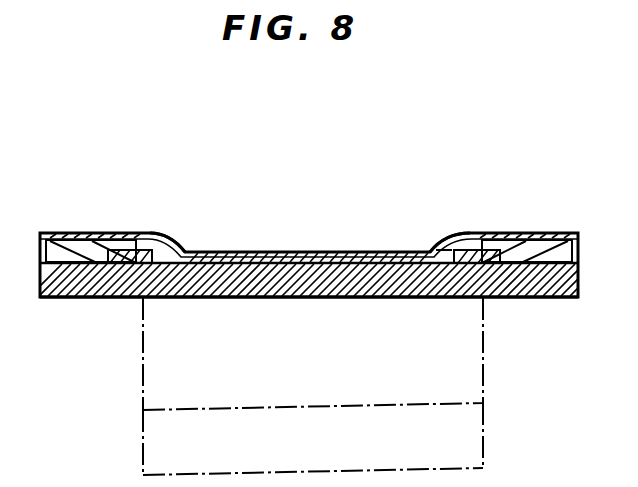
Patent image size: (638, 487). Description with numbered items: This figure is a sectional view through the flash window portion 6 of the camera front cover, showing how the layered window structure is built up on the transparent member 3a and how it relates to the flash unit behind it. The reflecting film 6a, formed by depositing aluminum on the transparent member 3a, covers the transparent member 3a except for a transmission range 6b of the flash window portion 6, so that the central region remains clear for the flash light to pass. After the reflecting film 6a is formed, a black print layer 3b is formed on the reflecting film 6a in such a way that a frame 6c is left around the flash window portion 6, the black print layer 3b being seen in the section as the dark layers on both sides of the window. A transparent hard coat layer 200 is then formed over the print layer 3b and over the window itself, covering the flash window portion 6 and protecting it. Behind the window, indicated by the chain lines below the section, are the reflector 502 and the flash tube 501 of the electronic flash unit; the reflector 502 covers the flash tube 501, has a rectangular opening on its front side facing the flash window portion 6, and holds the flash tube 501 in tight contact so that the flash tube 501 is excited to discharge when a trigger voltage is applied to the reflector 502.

The flash window portion 6 is at (291, 200).
The reflecting film 6a is at (127, 262).
The transmission range 6b is at (150, 232).
The frame 6c is at (476, 230).
The transparent member 3a is at (560, 298).
The black print layer 3b is at (66, 232).
The transparent hard coat layer 200 is at (452, 232).
The flash tube 501 is at (480, 453).
The reflector 502 is at (480, 370).